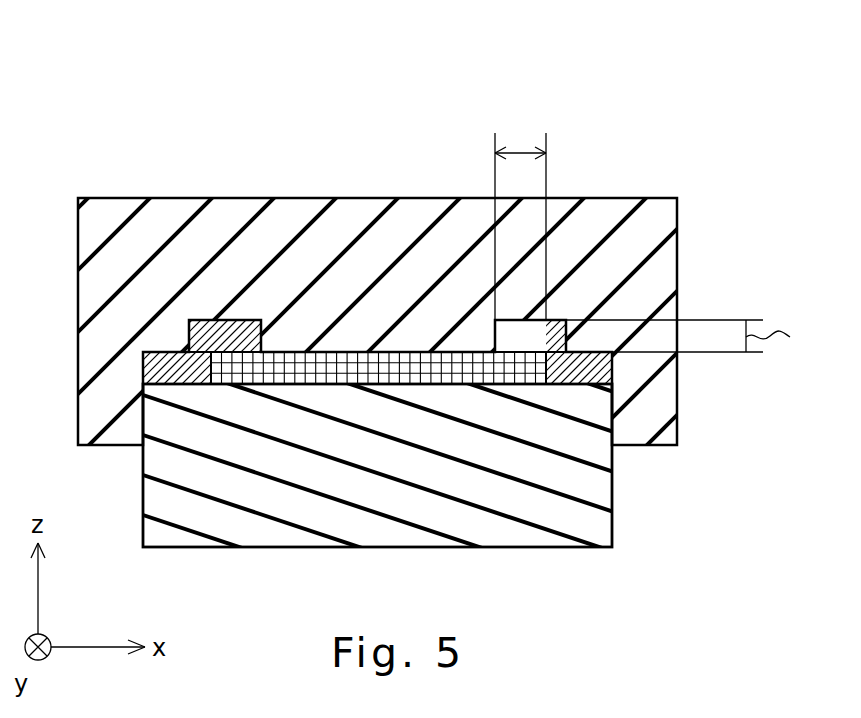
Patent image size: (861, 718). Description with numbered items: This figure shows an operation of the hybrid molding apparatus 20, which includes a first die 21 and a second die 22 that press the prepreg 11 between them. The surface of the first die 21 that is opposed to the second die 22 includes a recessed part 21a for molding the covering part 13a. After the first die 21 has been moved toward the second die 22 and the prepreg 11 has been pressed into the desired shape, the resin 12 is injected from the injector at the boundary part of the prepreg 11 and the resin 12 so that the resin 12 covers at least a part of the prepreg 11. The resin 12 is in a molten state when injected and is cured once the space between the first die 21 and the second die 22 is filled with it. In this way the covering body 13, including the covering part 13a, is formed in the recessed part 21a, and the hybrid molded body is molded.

The hybrid molding apparatus 20 is at (702, 119).
The first die 21 is at (655, 240).
The recessed part 21a is at (228, 337).
The second die 22 is at (576, 517).
The resin 12 is at (583, 378).
The prepreg 11 is at (378, 368).
The covering body 13 is at (557, 320).
The covering part 13a is at (521, 337).